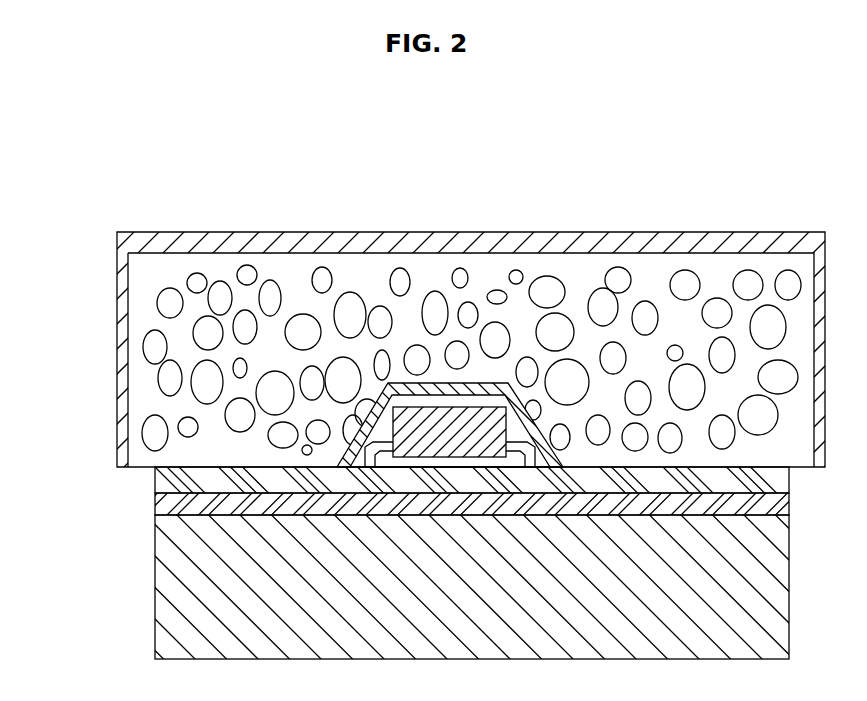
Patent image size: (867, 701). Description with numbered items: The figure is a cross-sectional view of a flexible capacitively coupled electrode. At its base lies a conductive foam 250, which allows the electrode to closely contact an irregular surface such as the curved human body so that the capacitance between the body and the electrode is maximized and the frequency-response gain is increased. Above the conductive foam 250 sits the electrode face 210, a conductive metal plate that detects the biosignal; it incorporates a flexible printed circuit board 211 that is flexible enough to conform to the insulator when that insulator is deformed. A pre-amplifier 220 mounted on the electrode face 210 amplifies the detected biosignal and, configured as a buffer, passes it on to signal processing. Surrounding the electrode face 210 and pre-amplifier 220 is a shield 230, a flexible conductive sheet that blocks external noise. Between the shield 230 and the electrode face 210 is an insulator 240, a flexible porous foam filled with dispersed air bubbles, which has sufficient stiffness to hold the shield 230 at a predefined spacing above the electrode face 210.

The electrode face 210 is at (167, 480).
The flexible printed circuit board 211 is at (167, 502).
The pre-amplifier 220 is at (445, 417).
The shield 230 is at (245, 241).
The insulator 240 is at (643, 360).
The conductive foam 250 is at (200, 587).